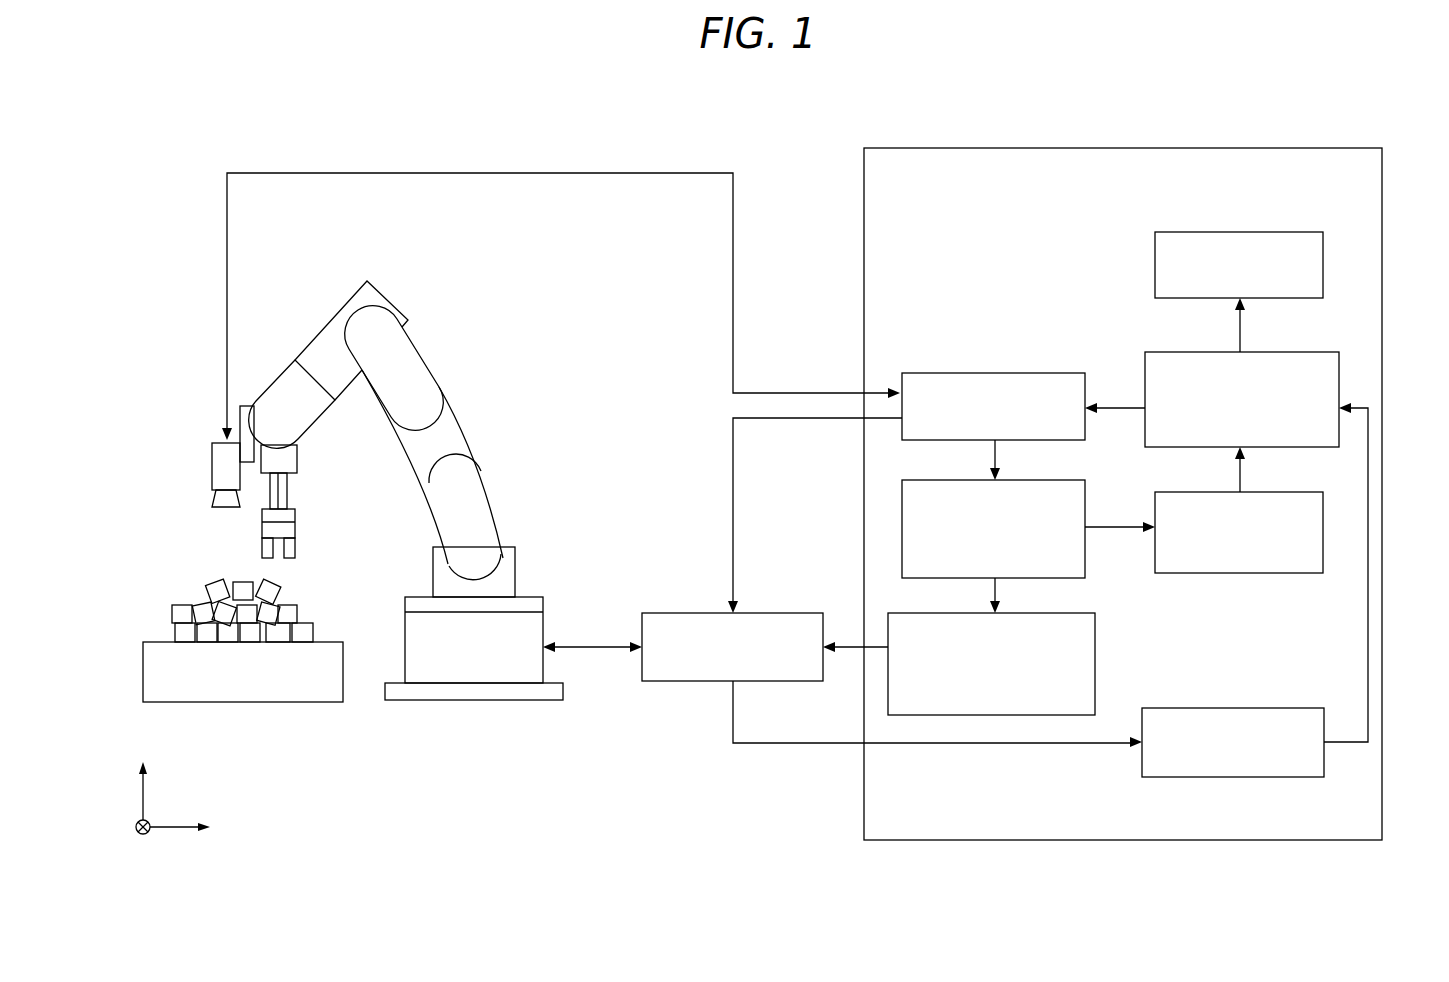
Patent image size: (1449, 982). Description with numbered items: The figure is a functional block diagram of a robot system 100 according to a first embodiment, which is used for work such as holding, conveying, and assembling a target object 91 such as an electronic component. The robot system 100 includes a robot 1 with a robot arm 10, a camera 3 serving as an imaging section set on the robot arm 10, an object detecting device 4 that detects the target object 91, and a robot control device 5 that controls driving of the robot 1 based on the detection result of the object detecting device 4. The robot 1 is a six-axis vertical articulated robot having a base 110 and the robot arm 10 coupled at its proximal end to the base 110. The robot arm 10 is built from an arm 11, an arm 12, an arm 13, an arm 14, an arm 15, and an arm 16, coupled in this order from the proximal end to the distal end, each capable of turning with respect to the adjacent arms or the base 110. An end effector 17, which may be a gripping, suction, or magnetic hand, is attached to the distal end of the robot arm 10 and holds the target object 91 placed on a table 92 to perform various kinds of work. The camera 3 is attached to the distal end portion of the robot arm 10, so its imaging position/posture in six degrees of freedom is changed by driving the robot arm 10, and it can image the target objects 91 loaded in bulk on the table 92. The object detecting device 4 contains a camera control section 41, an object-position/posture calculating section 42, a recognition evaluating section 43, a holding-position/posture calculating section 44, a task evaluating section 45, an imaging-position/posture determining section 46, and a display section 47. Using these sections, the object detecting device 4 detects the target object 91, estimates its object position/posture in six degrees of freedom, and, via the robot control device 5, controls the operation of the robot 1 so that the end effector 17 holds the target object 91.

The robot system 100 is at (1385, 120).
The robot 1 is at (453, 270).
The robot arm 10 is at (381, 277).
The arm 11 is at (472, 510).
The arm 12 is at (440, 438).
The arm 13 is at (405, 375).
The arm 14 is at (327, 350).
The arm 15 is at (295, 397).
The arm 16 is at (282, 462).
The end effector 17 is at (282, 530).
The base 110 is at (422, 633).
The camera 3 is at (220, 467).
The object detecting device 4 is at (1382, 185).
The robot control device 5 is at (678, 681).
The camera control section 41 is at (1047, 373).
The object-position/posture calculating section 42 is at (1047, 480).
The recognition evaluating section 43 is at (1283, 492).
The holding-position/posture calculating section 44 is at (1050, 613).
The task evaluating section 45 is at (1281, 708).
The imaging-position/posture determining section 46 is at (1276, 352).
The display section 47 is at (1283, 232).
The target object 91 is at (180, 613).
The table 92 is at (160, 670).